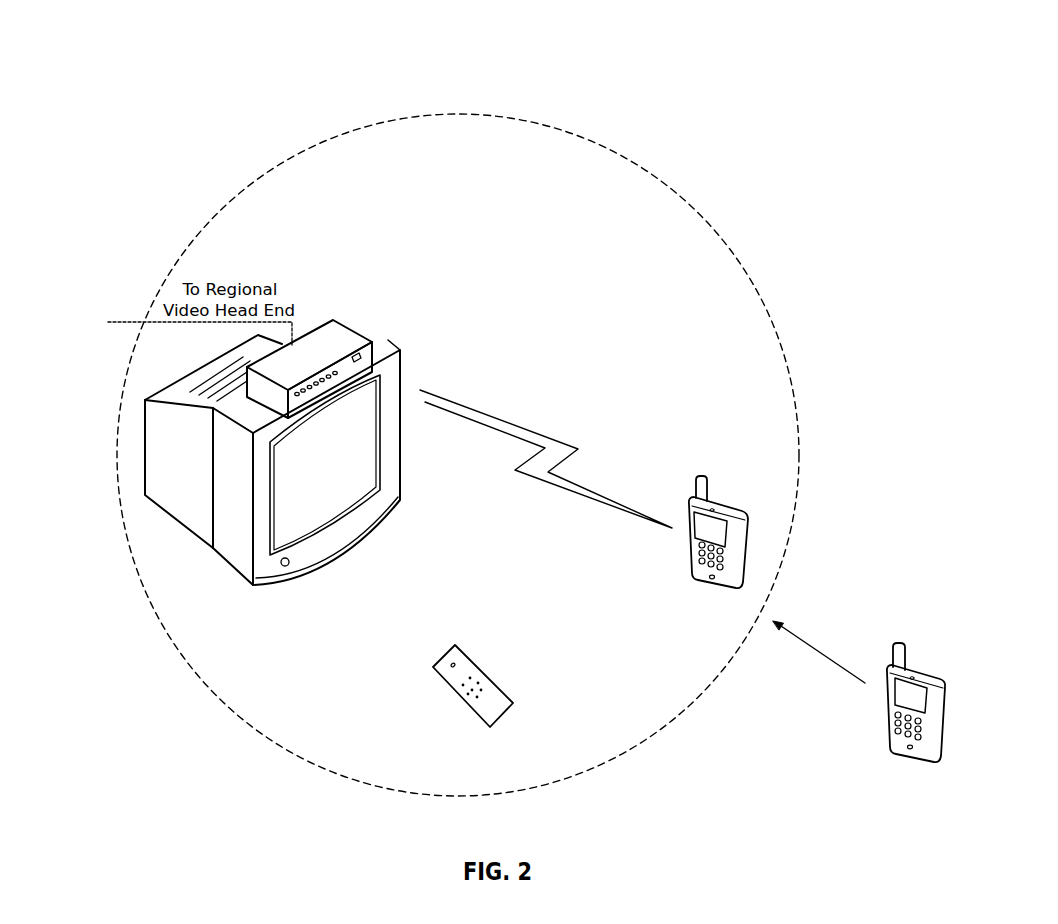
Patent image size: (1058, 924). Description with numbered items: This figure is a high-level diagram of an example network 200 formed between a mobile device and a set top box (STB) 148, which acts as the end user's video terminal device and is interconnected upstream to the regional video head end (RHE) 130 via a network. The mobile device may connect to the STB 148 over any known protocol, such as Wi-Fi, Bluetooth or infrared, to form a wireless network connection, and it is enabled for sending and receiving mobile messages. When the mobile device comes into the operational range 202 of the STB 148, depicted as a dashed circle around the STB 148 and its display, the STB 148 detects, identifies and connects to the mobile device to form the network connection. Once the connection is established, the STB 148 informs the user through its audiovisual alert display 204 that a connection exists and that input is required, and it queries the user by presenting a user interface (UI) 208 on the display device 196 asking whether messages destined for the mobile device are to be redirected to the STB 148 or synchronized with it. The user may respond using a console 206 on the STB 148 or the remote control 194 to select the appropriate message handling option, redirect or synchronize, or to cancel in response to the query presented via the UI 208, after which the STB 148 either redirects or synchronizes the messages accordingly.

The regional video head end (RHE) 130 is at (170, 325).
The set top box (STB) 148 is at (365, 377).
The remote control 194 is at (485, 672).
The display device 196 is at (403, 363).
The network 200 is at (655, 72).
The operational range 202 is at (478, 190).
The audiovisual alert display 204 is at (388, 340).
The console 206 is at (327, 377).
The user interface (UI) 208 is at (338, 497).